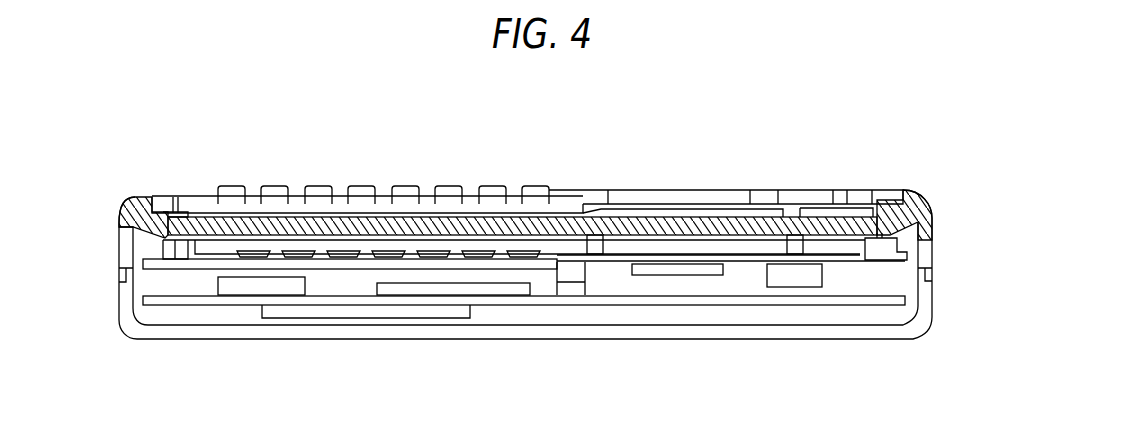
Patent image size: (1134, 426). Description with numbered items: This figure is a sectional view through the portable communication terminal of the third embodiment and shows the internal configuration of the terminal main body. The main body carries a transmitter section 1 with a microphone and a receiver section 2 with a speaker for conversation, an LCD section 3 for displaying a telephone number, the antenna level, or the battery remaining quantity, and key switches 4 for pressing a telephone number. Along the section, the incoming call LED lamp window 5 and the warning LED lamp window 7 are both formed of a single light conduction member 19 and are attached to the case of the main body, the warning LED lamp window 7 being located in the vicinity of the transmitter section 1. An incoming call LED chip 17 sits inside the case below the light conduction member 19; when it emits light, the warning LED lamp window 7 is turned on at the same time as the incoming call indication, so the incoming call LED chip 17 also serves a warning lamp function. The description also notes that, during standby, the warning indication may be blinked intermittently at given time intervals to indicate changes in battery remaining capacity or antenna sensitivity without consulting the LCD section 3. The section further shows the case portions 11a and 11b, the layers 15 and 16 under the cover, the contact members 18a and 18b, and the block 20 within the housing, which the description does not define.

The transmitter section 1 is at (175, 196).
The receiver section 2 is at (841, 189).
The LCD section 3 is at (664, 189).
The key switches 4 is at (495, 185).
The incoming call LED lamp window 5 is at (923, 189).
The warning LED lamp window 7 is at (140, 196).
The housing upper portion 11a is at (200, 194).
The housing lower portion 11b is at (495, 340).
The insulating sheet 15 is at (728, 206).
The end plate 16 is at (871, 198).
The incoming call LED chip 17 is at (881, 250).
The contact member 18a is at (734, 266).
The contact base plate 18b is at (621, 306).
The light conduction member 19 is at (332, 241).
The spacer block 20 is at (176, 254).